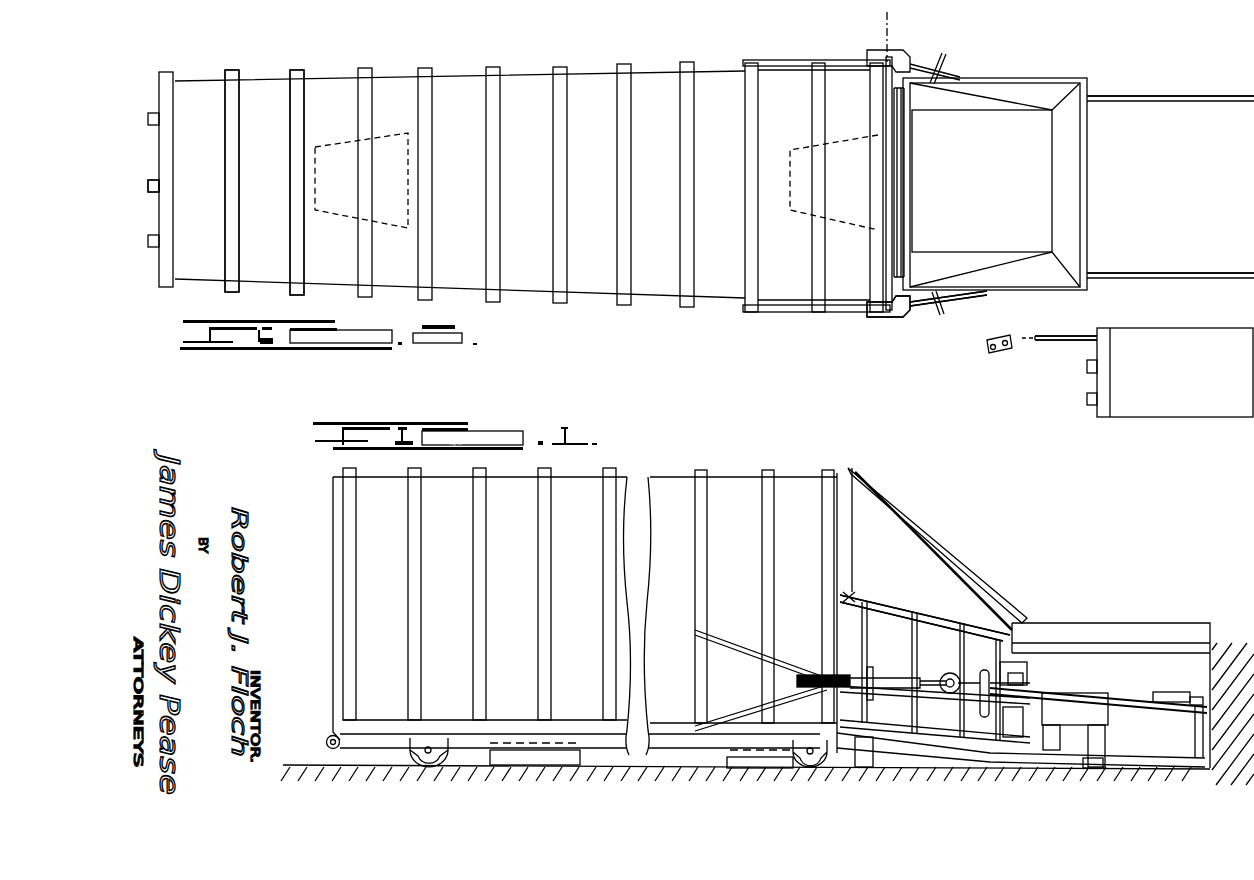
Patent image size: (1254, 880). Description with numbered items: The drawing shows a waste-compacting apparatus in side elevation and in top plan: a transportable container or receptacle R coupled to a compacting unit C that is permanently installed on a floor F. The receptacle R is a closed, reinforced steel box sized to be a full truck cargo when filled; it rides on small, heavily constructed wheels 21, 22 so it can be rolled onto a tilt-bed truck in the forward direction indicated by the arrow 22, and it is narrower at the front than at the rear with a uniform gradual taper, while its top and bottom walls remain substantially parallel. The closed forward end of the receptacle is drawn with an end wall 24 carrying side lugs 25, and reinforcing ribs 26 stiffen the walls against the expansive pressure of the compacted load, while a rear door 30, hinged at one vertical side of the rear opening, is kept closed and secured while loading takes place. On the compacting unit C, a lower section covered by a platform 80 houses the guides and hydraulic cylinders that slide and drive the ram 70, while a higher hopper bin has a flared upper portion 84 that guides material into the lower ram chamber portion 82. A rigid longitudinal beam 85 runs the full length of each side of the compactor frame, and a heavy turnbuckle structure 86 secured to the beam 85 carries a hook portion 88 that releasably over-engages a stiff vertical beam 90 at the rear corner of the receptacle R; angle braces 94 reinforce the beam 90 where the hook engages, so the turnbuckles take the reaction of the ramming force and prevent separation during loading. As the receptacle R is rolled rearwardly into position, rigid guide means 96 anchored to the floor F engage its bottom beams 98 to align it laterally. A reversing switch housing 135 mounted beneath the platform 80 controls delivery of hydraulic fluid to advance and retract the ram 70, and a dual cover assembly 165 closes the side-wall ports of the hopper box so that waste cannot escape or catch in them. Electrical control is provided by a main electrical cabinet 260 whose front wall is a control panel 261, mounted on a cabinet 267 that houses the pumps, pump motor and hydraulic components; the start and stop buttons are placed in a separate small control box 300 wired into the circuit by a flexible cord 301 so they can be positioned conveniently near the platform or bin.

In FIG. 2, the transportable container or receptacle R is at (463, 72).
In FIG. 1, the transportable container or receptacle R is at (760, 461).
In FIG. 1, the wheel 21 is at (427, 758).
In FIG. 1, the wheel / direction arrow 22 is at (308, 474).
In FIG. 2, the end wall / pivot 24 is at (154, 113).
In FIG. 1, the end wall / pivot 24 is at (325, 757).
In FIG. 2, the lug 25 is at (152, 182).
In FIG. 2, the reinforcing rib 26 is at (296, 92).
In FIG. 2, the door 30 is at (882, 30).
In FIG. 1, the ram 70 is at (1031, 672).
In FIG. 2, the platform 80 is at (1250, 247).
In FIG. 2, the lower ram chamber portion 82 is at (963, 133).
In FIG. 1, the lower ram chamber portion 82 is at (900, 719).
In FIG. 2, the hopper bin upper portion 84 is at (1042, 92).
In FIG. 1, the hopper bin upper portion 84 is at (883, 517).
In FIG. 1, the longitudinal beam 85 is at (1147, 710).
In FIG. 2, the turnbuckle structure 86 is at (950, 304).
In FIG. 1, the turnbuckle structure 86 is at (898, 674).
In FIG. 2, the hook portion 88 is at (893, 318).
In FIG. 1, the hook portion 88 is at (788, 673).
In FIG. 1, the vertical beam 90 is at (820, 575).
In FIG. 1, the angle brace 94 is at (741, 657).
In FIG. 2, the guide means 96 is at (387, 140).
In FIG. 1, the guide means 96 is at (530, 758).
In FIG. 1, the bottom beam 98 is at (687, 748).
In FIG. 1, the reversing switch housing 135 is at (1183, 682).
In FIG. 1, the dual cover assembly 165 is at (975, 677).
In FIG. 2, the main electrical cabinet 260 is at (1100, 327).
In FIG. 2, the control panel 261 is at (1095, 377).
In FIG. 2, the cabinet 267 is at (1213, 371).
In FIG. 2, the control box 300 is at (993, 354).
In FIG. 2, the flexible cord 301 is at (1067, 322).
In FIG. 2, the compacting unit C is at (1131, 94).
In FIG. 1, the compacting unit C is at (1041, 599).
In FIG. 1, the floor F is at (292, 762).